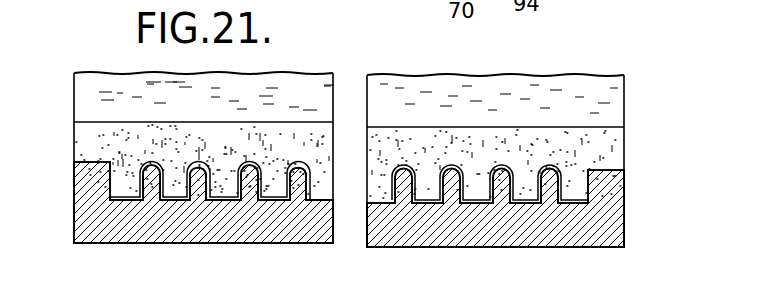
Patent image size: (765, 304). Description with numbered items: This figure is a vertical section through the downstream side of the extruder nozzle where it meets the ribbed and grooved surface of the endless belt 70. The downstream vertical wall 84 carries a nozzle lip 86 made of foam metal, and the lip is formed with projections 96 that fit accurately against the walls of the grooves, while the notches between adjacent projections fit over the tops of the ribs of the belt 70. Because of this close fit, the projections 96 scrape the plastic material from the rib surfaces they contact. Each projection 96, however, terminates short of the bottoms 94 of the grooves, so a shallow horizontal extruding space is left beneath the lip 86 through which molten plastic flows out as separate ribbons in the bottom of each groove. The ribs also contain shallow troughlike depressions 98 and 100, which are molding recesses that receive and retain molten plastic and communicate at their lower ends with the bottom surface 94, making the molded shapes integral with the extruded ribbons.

The endless belt 70 is at (480, 249).
The downstream vertical wall 84 is at (617, 100).
The nozzle lip 86 is at (615, 148).
The bottoms of the grooves 94 is at (177, 198).
The projections 96 is at (122, 182).
The troughlike depressions 98 is at (198, 162).
The troughlike depressions 100 is at (305, 187).